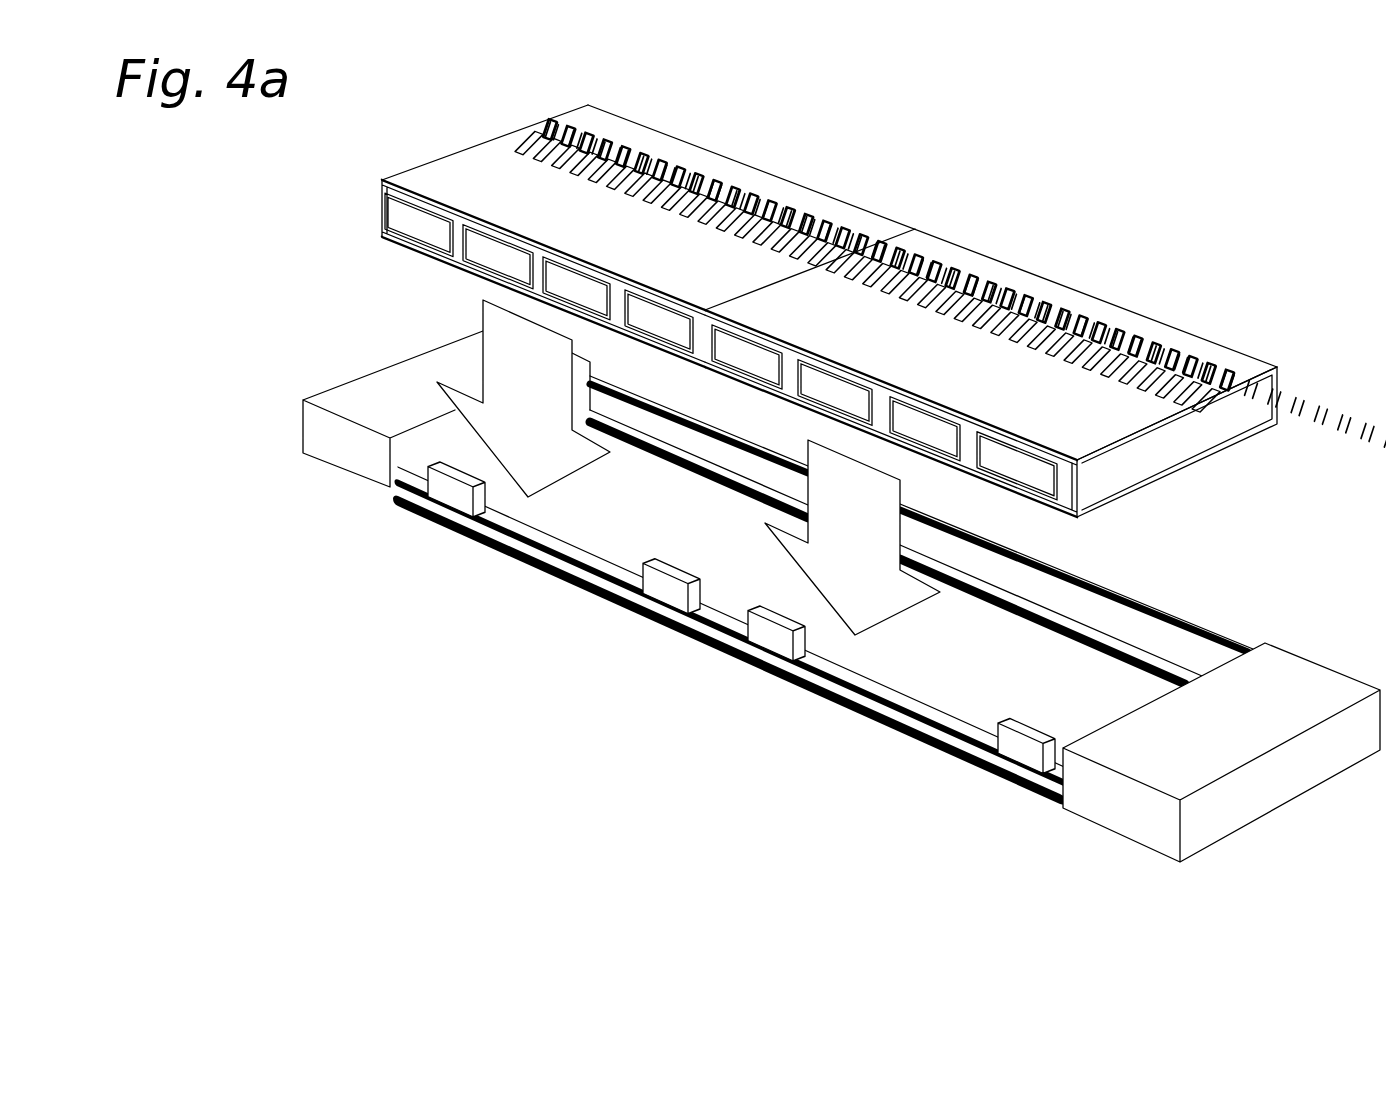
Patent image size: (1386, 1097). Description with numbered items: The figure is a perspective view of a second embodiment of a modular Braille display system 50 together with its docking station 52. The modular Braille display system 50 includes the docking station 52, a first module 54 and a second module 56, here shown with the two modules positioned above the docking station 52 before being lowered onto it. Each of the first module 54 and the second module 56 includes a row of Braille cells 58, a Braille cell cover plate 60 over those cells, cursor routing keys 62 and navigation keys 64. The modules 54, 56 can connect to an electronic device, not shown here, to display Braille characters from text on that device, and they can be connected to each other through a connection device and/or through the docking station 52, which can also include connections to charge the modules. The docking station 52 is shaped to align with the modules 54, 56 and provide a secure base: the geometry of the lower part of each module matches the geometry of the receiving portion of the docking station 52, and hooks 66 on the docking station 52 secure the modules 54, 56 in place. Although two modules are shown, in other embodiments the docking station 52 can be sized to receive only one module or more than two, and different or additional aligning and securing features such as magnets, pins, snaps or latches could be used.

The modular Braille display system 50 is at (898, 168).
The docking station 52 is at (1310, 805).
The first module 54 is at (1178, 310).
The second module 56 is at (752, 150).
The Braille cells 58 is at (592, 128).
The Braille cell cover plate 60 is at (690, 160).
The cursor routing keys 62 is at (537, 150).
The navigation keys 64 is at (497, 258).
The hooks 66 is at (432, 512).